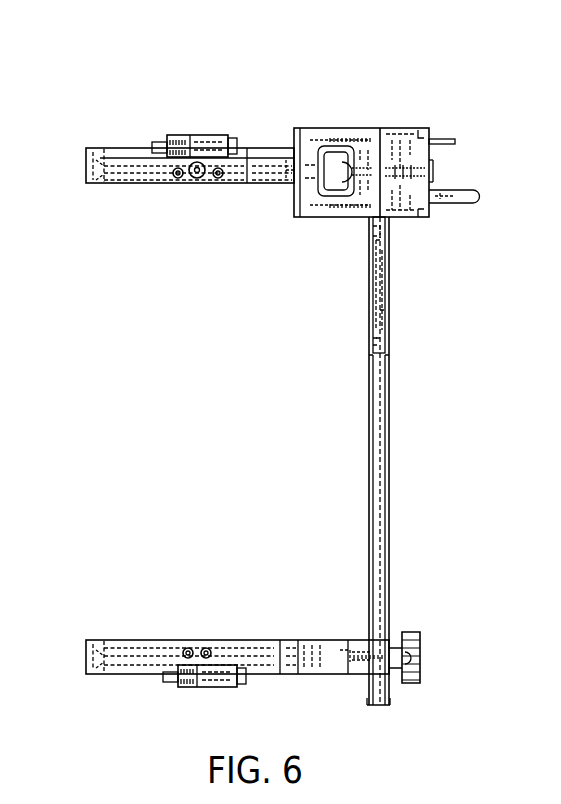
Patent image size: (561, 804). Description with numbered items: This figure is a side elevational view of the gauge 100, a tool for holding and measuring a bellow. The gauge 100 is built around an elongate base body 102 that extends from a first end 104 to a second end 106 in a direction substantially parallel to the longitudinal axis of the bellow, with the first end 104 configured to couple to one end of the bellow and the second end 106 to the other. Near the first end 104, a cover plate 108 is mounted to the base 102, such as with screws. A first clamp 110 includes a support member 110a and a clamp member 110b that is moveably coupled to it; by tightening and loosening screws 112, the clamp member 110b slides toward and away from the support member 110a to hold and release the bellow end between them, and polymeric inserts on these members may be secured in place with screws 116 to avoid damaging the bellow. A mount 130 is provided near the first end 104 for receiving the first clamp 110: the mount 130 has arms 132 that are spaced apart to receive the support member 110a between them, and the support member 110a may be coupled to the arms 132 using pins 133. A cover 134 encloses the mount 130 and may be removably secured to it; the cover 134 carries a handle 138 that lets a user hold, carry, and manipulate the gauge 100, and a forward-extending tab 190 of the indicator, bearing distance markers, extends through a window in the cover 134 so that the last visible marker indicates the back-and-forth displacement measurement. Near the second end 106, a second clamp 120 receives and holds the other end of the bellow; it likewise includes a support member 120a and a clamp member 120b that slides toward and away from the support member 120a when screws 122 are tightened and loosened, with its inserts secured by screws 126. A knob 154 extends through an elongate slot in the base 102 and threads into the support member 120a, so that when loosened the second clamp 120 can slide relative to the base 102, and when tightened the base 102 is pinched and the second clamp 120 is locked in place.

The gauge 100 is at (384, 86).
The base body 102 is at (390, 403).
The first end 104 is at (315, 118).
The second end 106 is at (127, 713).
The cover plate 108 is at (390, 320).
The first clamp 110 is at (83, 196).
The support member 110a is at (243, 160).
The clamp member 110b is at (122, 153).
The screws 112 is at (163, 140).
The screws 116 is at (178, 178).
The second clamp 120 is at (70, 688).
The support member 120a is at (307, 638).
The clamp member 120b is at (130, 638).
The screws 122 is at (232, 690).
The screws 126 is at (192, 641).
The mount 130 is at (349, 128).
The arms 132 is at (252, 187).
The pins 133 is at (200, 163).
The cover 134 is at (410, 128).
The handle 138 is at (481, 197).
The knob 154 is at (421, 672).
The tab 190 is at (451, 139).